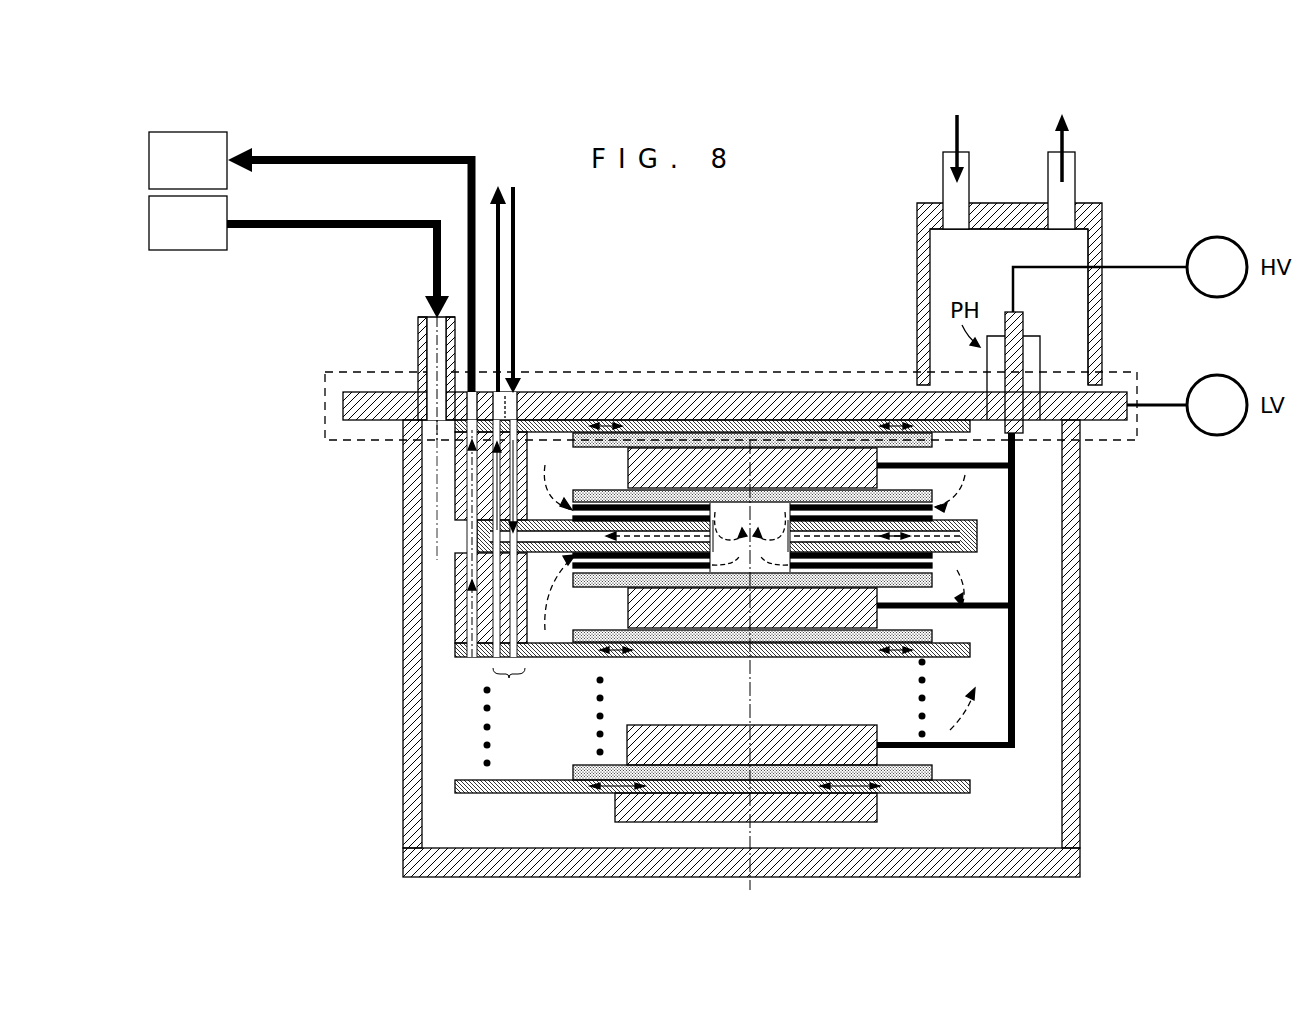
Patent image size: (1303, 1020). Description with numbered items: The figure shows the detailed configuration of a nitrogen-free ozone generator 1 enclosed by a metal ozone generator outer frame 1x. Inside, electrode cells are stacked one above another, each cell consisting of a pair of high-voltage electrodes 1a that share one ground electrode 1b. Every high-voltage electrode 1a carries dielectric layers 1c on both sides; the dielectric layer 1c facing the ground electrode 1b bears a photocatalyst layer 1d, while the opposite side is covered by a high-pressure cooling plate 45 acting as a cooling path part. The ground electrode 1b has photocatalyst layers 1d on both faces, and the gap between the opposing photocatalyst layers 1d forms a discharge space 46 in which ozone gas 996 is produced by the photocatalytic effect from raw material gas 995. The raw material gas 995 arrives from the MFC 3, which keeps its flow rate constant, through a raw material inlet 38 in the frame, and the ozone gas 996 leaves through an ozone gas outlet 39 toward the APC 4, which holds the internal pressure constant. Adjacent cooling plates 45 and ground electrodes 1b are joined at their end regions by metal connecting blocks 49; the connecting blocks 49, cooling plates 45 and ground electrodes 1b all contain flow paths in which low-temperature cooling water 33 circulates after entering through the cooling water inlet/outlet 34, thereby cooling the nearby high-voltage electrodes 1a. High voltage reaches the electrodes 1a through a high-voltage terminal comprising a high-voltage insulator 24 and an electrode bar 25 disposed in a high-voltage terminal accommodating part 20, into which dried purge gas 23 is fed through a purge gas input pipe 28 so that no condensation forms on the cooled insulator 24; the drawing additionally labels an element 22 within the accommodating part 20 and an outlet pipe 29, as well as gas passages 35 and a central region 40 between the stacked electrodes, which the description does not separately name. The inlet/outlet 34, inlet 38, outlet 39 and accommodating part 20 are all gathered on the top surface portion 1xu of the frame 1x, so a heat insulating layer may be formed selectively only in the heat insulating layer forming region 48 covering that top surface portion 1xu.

The nitrogen-free ozone generator 1 is at (735, 596).
The ozone generator outer frame 1x is at (1040, 880).
The top surface portion 1xu is at (848, 400).
The high-voltage electrode 1a is at (628, 468).
The ground electrode 1b is at (977, 536).
The dielectric layer 1c is at (759, 590).
The photocatalyst layer 1d is at (930, 517).
The MFC 3 is at (190, 250).
The APC 4 is at (190, 132).
The high-voltage terminal accommodating part 20 is at (1103, 207).
The plasma generation chamber 22 is at (1090, 312).
The purge gas 23 is at (955, 136).
The high-voltage insulator 24 is at (1043, 357).
The electrode bar 25 is at (1023, 430).
The purge gas input pipe 28 is at (942, 174).
The gas outlet pipe 29 is at (1078, 174).
The low-temperature cooling water 33 is at (517, 278).
The cooling water inlet/outlet 34 is at (540, 398).
The gas supply channels 35 is at (496, 560).
The raw material inlet 38 is at (418, 345).
The ozone gas outlet 39 is at (456, 500).
The central opening 40 is at (727, 520).
The high-pressure cooling plate 45 is at (660, 433).
The discharge space 46 is at (590, 558).
The heat insulating layer forming region 48 is at (367, 442).
The connecting block 49 is at (457, 494).
The raw material gas 995 is at (285, 228).
The ozone gas 996 is at (285, 157).